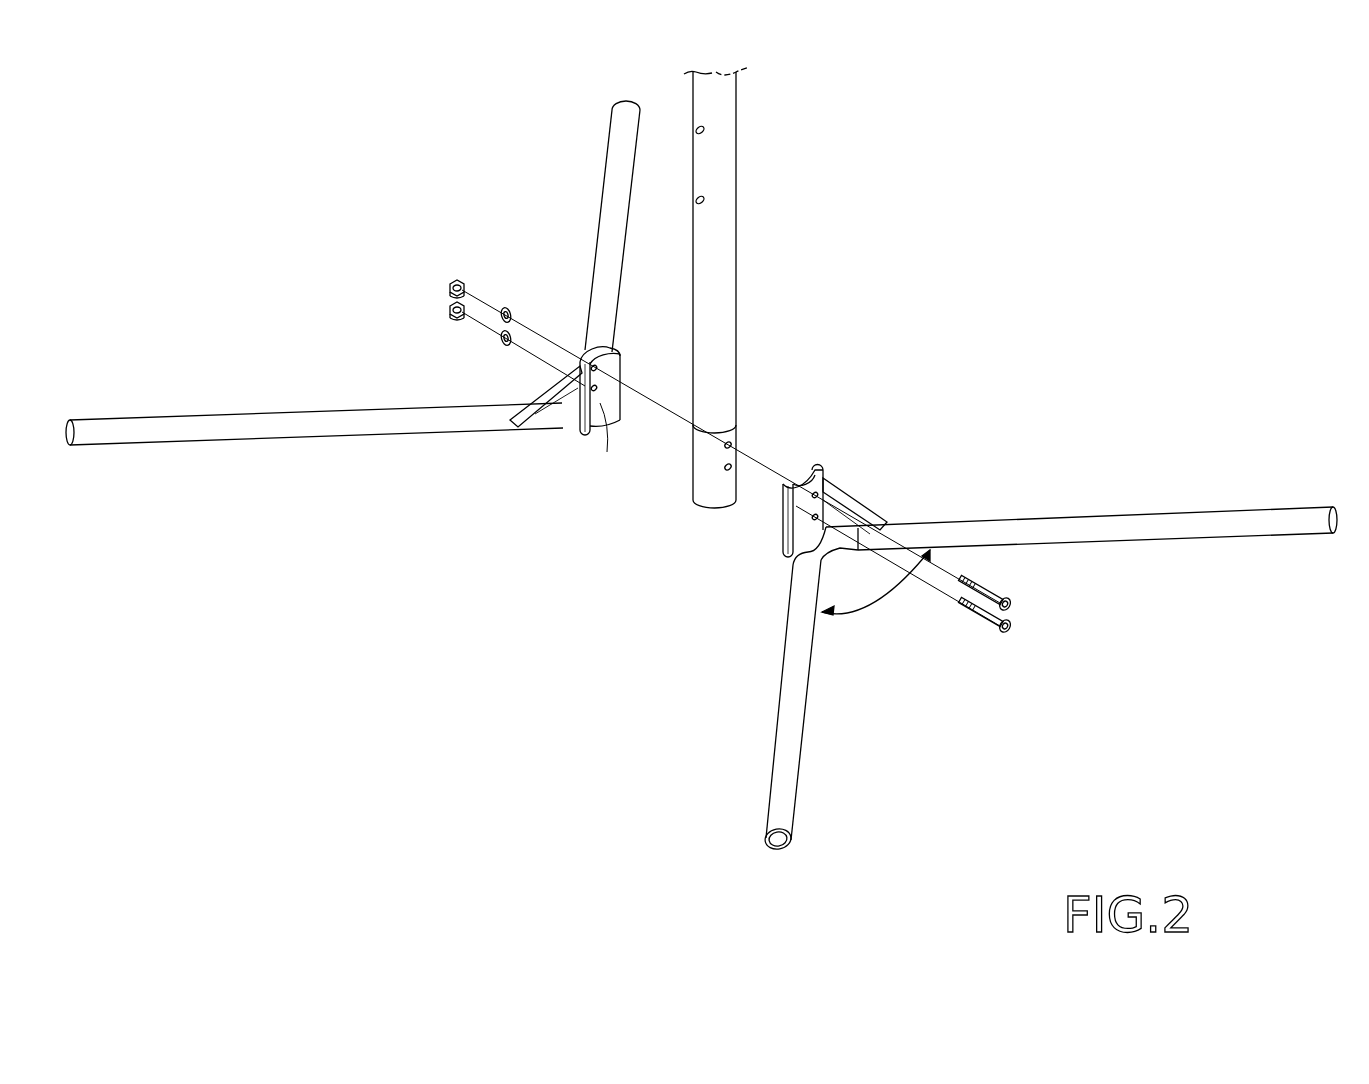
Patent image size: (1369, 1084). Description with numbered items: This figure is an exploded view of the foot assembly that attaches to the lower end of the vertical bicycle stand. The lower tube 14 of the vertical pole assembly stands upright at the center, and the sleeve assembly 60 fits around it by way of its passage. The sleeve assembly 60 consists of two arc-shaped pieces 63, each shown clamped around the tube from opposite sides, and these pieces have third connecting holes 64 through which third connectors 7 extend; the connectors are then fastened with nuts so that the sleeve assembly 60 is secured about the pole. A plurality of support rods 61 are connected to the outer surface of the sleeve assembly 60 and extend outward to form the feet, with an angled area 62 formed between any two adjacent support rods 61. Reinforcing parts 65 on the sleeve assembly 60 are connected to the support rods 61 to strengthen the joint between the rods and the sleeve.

The lower tube 14 is at (735, 250).
The support rods 61 is at (608, 203).
The sleeve assembly 60 is at (696, 491).
The arc-shaped pieces 63 is at (600, 410).
The third connecting holes 64 is at (835, 478).
The reinforcing parts 65 is at (522, 420).
The angled area 62 is at (873, 600).
The third connectors 7 is at (1000, 640).